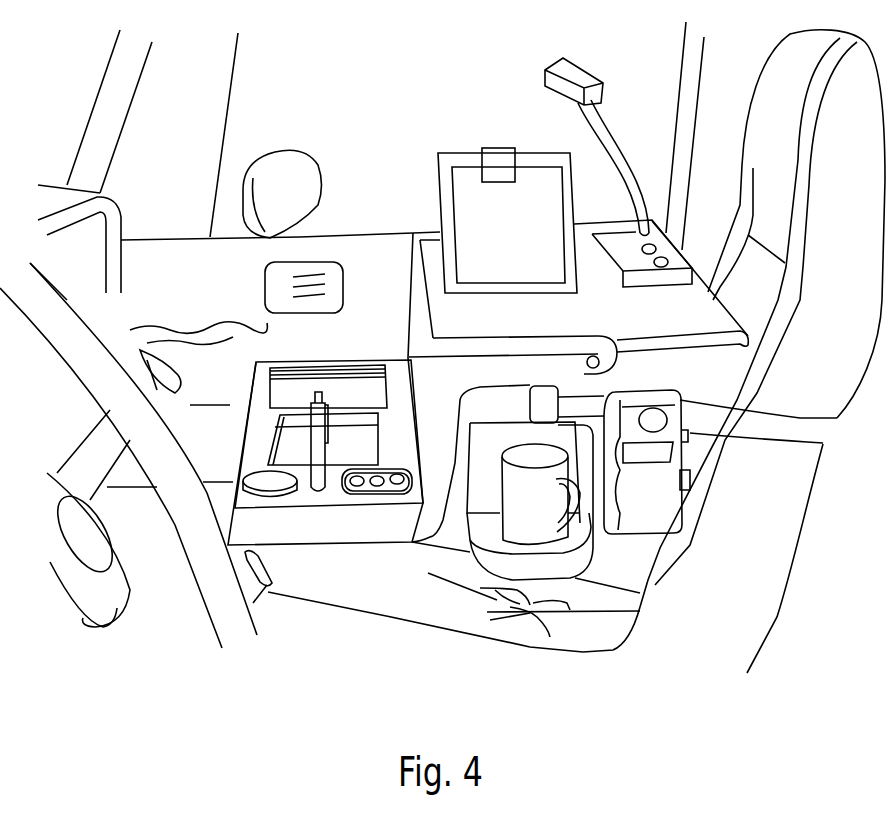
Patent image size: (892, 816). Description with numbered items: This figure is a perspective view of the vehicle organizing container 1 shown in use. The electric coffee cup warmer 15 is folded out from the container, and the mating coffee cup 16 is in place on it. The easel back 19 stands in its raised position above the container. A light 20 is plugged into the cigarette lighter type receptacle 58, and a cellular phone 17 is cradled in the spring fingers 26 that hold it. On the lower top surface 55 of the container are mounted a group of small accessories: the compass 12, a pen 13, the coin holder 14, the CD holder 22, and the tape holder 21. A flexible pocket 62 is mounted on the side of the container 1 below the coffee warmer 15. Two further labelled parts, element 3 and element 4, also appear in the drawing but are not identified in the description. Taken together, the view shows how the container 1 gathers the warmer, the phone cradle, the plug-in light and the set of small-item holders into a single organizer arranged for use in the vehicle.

The container 1 is at (340, 602).
The seat armrest 3 is at (772, 437).
The hinge bracket 4 is at (540, 395).
The compass 12 is at (278, 498).
The pen 13 is at (318, 493).
The coin holder 14 is at (378, 496).
The electric coffee cup warmer 15 is at (580, 562).
The mating coffee cup 16 is at (507, 457).
The cellular phone 17 is at (660, 520).
The easel back 19 is at (463, 157).
The light 20 is at (583, 73).
The tape holder 21 is at (283, 450).
The CD holder 22 is at (358, 372).
The spring fingers 26 is at (693, 481).
The lower top surface 55 is at (258, 395).
The cigarette lighter type receptacle 58 is at (642, 263).
The flexible pocket 62 is at (437, 613).